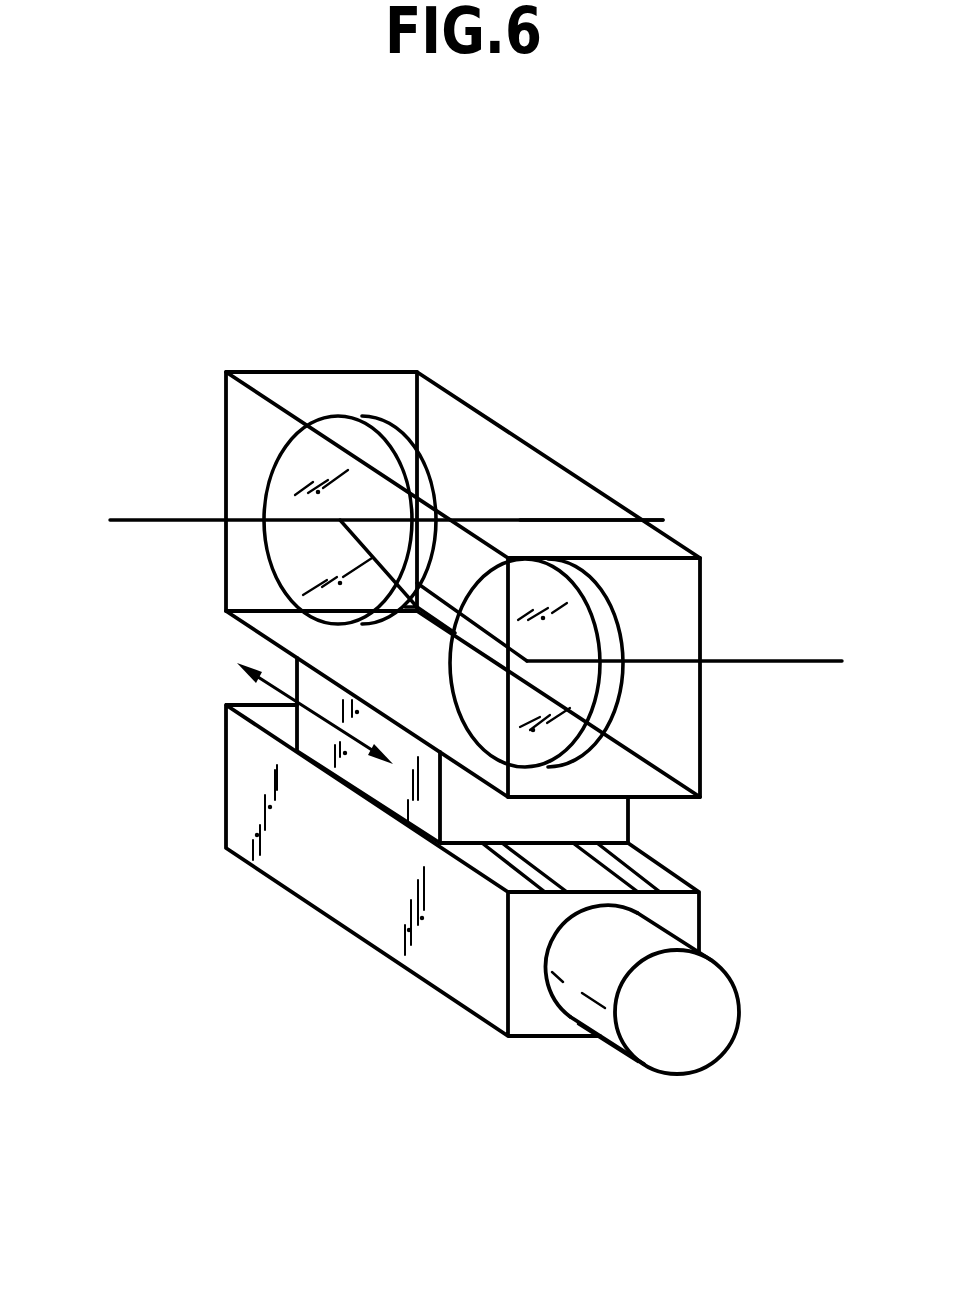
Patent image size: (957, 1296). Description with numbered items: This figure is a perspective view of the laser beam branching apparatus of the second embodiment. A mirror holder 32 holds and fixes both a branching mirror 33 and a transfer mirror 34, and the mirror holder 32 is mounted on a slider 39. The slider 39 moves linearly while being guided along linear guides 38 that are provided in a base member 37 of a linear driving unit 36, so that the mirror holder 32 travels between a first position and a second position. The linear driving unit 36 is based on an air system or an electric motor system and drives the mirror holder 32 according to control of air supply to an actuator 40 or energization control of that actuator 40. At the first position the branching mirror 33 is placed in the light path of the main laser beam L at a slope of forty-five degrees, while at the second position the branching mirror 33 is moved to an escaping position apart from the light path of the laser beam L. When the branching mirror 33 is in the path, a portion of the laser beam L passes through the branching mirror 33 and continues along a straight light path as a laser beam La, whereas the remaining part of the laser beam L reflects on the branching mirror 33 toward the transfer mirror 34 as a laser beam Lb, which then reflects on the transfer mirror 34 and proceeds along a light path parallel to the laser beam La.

The mirror holder 32 is at (680, 592).
The branching mirror 33 is at (353, 438).
The transfer mirror 34 is at (567, 695).
The linear driving unit 36 is at (730, 923).
The base member 37 is at (448, 942).
The linear guides 38 is at (545, 880).
The slider 39 is at (607, 812).
The actuator 40 is at (708, 1017).
The laser beam L is at (148, 522).
The laser beam La is at (569, 519).
The laser beam Lb is at (778, 661).